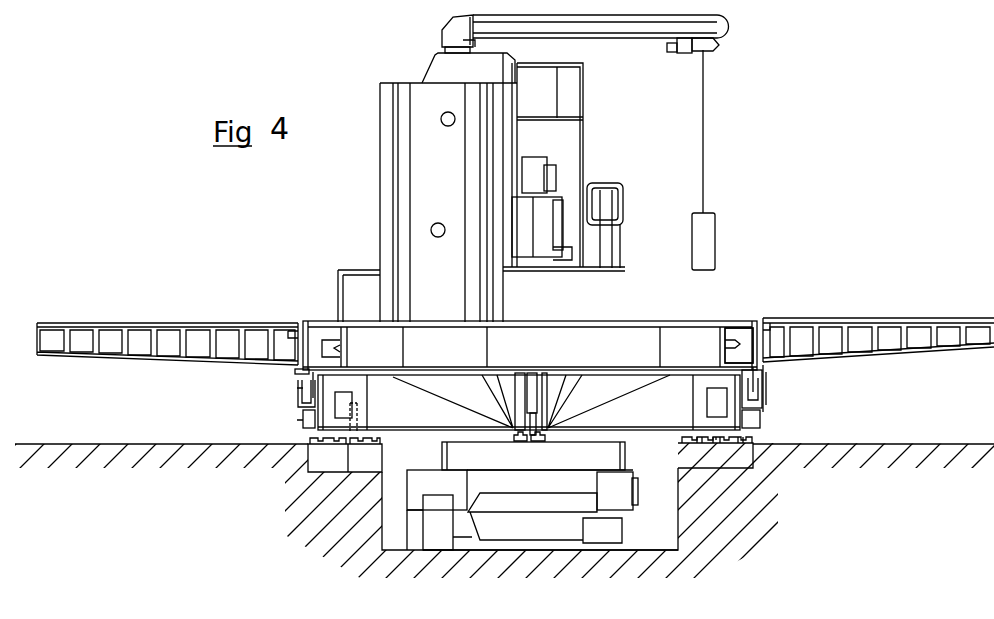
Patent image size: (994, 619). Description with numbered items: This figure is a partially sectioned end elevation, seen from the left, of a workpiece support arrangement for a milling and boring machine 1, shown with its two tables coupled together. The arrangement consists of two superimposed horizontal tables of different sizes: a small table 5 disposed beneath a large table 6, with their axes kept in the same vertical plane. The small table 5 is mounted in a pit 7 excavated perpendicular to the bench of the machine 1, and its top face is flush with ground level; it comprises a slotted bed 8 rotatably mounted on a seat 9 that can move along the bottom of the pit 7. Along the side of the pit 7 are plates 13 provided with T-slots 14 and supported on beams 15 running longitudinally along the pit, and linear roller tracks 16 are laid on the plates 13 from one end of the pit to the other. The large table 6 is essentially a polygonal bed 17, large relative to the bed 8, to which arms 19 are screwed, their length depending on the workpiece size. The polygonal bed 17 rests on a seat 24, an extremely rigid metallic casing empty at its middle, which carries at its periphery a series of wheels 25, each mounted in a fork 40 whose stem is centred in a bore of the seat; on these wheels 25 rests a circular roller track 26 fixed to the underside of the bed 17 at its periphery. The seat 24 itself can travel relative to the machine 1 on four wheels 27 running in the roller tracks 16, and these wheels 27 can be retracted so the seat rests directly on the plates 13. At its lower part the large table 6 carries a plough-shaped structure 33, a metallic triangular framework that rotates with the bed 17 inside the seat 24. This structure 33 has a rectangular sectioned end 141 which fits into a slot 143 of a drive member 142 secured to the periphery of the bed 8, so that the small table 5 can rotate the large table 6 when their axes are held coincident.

The milling and boring machine 1 is at (370, 192).
The small table 5 is at (450, 465).
The large table 6 is at (729, 306).
The pit 7 is at (401, 533).
The slotted bed 8 is at (625, 459).
The seat 9 is at (440, 496).
The plates 13 is at (751, 443).
The T-slots 14 is at (718, 444).
The beams 15 is at (744, 454).
The linear roller tracks 16 is at (350, 447).
The polygonal bed 17 is at (632, 322).
The arms 19 is at (888, 335).
The seat 24 is at (327, 404).
The wheels 25 is at (751, 391).
The circular roller track 26 is at (295, 373).
The wheels 27 is at (354, 426).
The plough-shaped structure 33 is at (557, 403).
The fork 40 is at (763, 401).
The rectangular sectioned end 141 is at (537, 422).
The drive member 142 is at (547, 439).
The slot 143 is at (518, 439).